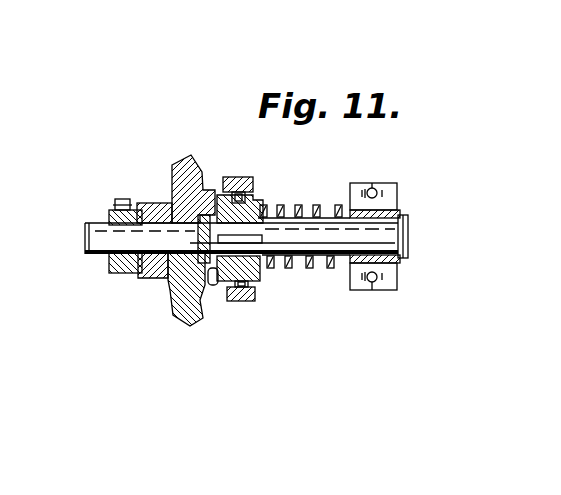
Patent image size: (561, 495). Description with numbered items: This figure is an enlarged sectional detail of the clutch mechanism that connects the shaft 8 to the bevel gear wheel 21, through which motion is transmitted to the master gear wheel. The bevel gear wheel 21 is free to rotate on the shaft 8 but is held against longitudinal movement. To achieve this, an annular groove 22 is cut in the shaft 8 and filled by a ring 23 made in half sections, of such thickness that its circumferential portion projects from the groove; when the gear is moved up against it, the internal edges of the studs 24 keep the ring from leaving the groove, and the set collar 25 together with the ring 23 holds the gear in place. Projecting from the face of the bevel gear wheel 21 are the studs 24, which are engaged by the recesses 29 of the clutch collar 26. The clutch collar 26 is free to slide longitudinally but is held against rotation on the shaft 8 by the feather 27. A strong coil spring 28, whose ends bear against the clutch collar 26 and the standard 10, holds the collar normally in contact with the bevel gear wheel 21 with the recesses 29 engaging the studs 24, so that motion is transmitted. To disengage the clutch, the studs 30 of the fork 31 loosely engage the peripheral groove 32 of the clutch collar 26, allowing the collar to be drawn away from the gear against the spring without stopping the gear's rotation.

The shaft 8 is at (97, 224).
The standard 10 is at (388, 183).
The bevel gear wheel 21 is at (180, 159).
The annular groove 22 is at (167, 278).
The ring 23 is at (199, 220).
The studs 24 is at (216, 196).
The set collar 25 is at (112, 273).
The clutch collar 26 is at (258, 203).
The feather 27 is at (262, 262).
The coil spring 28 is at (311, 268).
The recesses 29 is at (211, 290).
The studs 30 is at (244, 302).
The fork 31 is at (253, 180).
The peripheral groove 32 is at (251, 290).